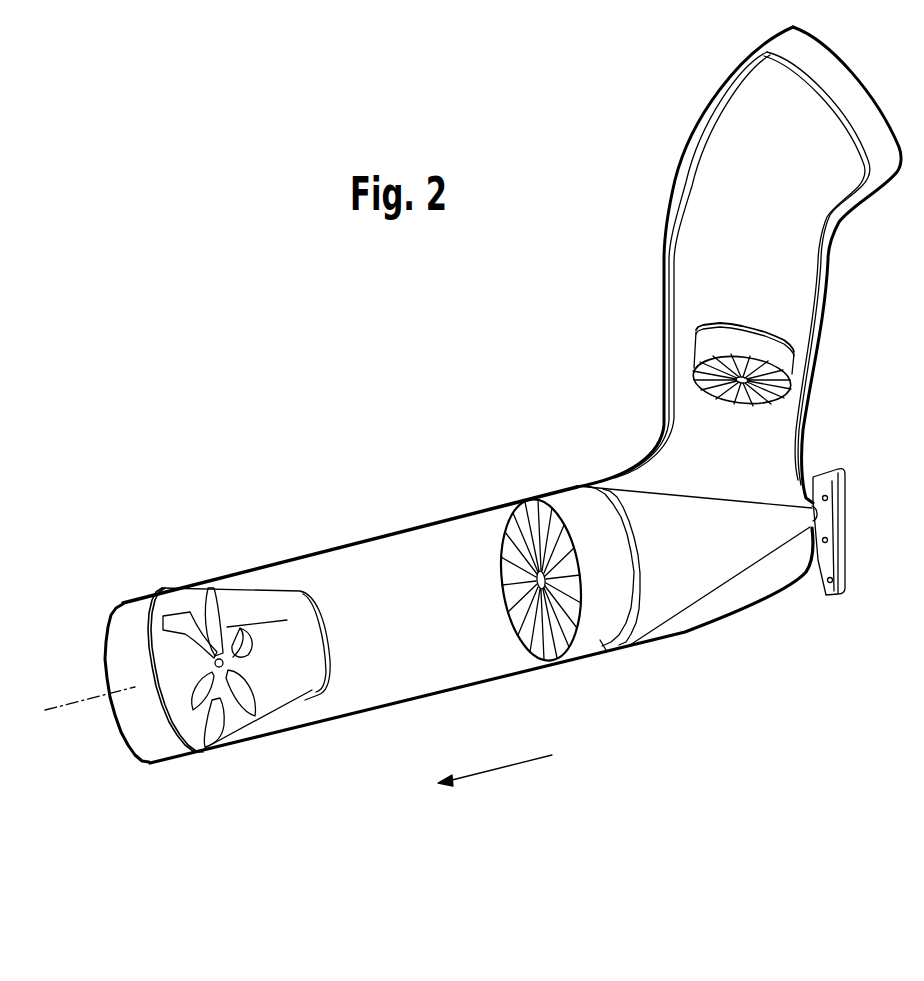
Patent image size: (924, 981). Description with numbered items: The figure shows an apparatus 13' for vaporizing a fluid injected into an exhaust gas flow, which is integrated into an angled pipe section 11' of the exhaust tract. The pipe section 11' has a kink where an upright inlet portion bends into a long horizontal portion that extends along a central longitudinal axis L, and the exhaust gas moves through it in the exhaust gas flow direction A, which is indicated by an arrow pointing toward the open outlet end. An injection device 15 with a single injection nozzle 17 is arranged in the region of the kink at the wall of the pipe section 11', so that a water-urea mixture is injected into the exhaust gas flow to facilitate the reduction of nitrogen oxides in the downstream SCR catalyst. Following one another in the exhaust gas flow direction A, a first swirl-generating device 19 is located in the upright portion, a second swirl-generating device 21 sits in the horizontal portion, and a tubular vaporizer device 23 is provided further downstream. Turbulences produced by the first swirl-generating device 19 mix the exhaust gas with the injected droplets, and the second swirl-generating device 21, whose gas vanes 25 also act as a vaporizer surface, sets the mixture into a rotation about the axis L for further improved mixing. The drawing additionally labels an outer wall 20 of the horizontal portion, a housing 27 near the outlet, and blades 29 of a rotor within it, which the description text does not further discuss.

The angled pipe section 11' is at (739, 265).
The apparatus 13' is at (636, 513).
The injection device 15 is at (838, 565).
The injection nozzle 17 is at (800, 514).
The first swirl-generating device 19 is at (737, 340).
The outer tube 20 is at (263, 548).
The second swirl-generating device 21 is at (592, 643).
The tubular vaporizer device 23 is at (304, 718).
The gas vanes 25 is at (702, 386).
The fan housing 27 is at (332, 640).
The fan blades 29 is at (238, 600).
The central longitudinal axis L is at (82, 705).
The exhaust gas flow direction A is at (527, 763).